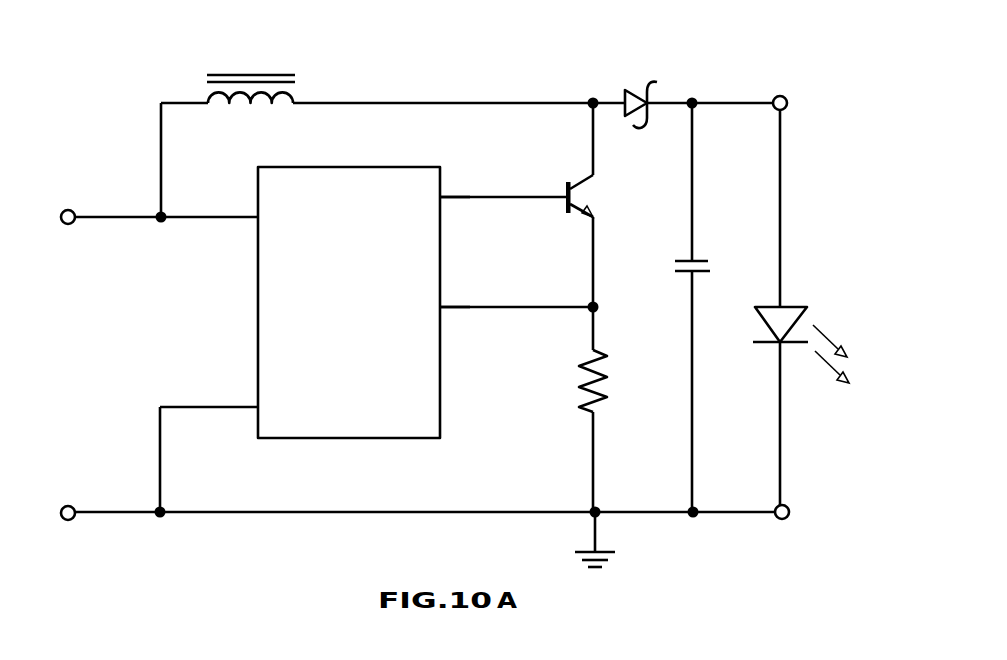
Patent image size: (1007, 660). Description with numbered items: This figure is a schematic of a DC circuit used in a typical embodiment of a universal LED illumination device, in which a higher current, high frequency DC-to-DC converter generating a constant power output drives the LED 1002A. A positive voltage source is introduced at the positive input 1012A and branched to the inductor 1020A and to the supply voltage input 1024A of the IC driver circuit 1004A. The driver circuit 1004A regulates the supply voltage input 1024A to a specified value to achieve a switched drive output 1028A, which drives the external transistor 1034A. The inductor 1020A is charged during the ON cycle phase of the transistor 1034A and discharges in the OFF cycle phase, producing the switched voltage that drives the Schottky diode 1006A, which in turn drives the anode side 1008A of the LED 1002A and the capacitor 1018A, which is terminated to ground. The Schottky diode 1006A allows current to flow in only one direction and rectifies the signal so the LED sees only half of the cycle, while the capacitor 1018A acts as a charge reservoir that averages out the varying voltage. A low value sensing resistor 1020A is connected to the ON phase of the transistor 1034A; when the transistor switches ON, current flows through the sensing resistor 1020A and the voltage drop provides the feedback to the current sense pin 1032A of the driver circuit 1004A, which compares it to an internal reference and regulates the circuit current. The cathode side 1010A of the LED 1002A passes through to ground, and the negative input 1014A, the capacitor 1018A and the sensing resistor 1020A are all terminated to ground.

The LED 1002A is at (825, 325).
The IC driver circuit U1 1004A is at (258, 302).
The Schottky diode D1 1006A is at (623, 92).
The anode side 1008A is at (788, 82).
The cathode side 1010A is at (785, 520).
The +Vin 1012A is at (64, 208).
The -Vin 1014A is at (65, 505).
The capacitor C1 1018A is at (700, 257).
The inductor L1 / sensing resistor R1 1020A is at (227, 77).
The VCC input 1024A is at (257, 222).
The VDrive output 1028A is at (441, 198).
The current sense pin 1032A is at (440, 312).
The transistor Q1 1034A is at (583, 188).